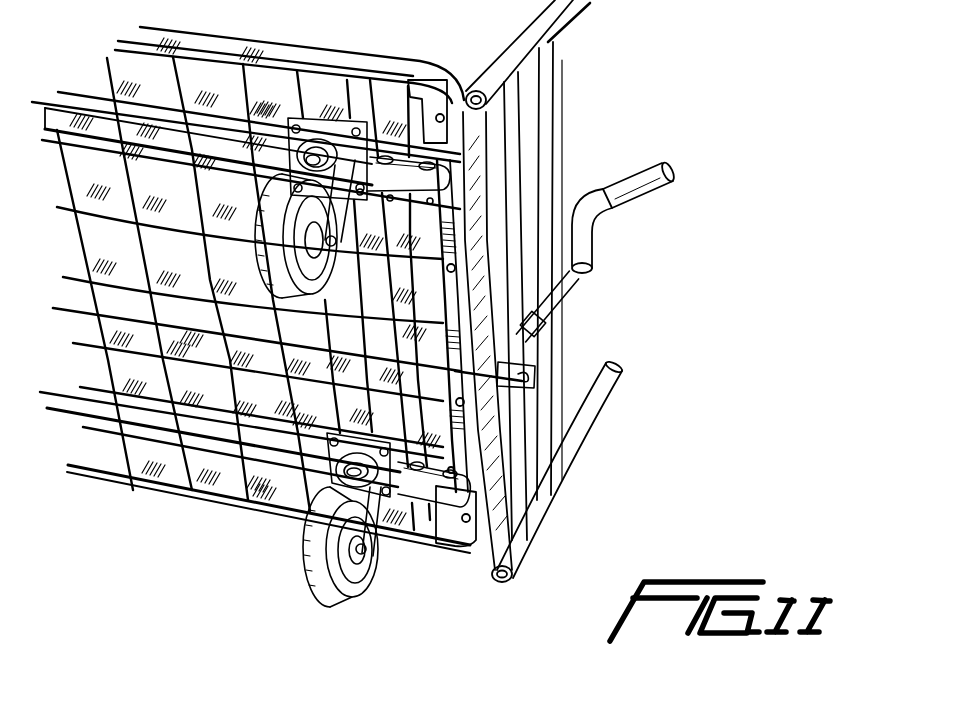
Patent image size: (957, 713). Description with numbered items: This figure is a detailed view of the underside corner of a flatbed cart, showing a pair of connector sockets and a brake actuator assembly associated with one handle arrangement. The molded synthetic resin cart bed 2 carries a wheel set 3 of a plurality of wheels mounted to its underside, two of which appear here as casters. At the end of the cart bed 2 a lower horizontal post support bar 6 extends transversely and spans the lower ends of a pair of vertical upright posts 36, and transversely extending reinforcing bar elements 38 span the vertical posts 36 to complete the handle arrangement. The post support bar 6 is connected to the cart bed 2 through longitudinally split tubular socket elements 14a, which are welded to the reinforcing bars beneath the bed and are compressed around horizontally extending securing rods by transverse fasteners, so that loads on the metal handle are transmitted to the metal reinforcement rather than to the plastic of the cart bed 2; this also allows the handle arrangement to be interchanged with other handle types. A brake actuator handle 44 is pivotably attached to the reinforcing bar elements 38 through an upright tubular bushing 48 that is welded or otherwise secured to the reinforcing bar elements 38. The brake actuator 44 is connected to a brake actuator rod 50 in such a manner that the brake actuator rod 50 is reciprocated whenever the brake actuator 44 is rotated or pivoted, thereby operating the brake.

The cart bed 2 is at (182, 497).
The wheel set 3 is at (310, 598).
The split tubular socket element 14a is at (432, 490).
The lower horizontal post support bar 6 is at (483, 527).
The vertical upright post 36 is at (556, 71).
The reinforcing bar element 38 is at (558, 108).
The brake actuator handle 44 is at (600, 228).
The upright tubular bushing 48 is at (578, 297).
The brake actuator rod 50 is at (500, 397).